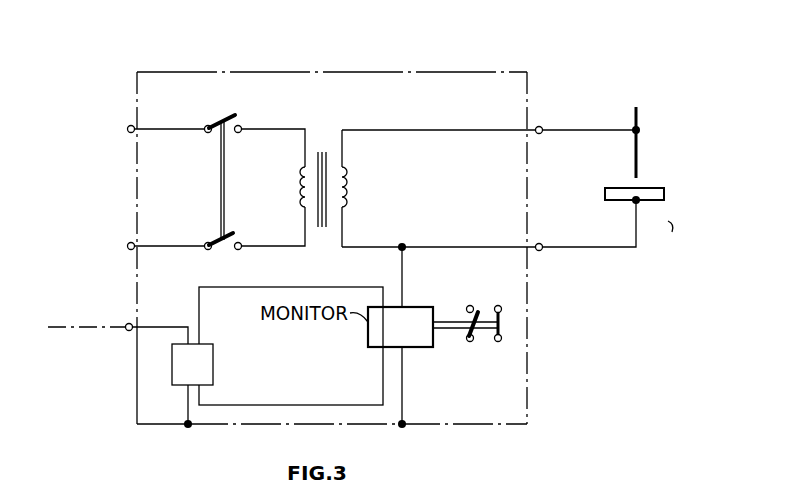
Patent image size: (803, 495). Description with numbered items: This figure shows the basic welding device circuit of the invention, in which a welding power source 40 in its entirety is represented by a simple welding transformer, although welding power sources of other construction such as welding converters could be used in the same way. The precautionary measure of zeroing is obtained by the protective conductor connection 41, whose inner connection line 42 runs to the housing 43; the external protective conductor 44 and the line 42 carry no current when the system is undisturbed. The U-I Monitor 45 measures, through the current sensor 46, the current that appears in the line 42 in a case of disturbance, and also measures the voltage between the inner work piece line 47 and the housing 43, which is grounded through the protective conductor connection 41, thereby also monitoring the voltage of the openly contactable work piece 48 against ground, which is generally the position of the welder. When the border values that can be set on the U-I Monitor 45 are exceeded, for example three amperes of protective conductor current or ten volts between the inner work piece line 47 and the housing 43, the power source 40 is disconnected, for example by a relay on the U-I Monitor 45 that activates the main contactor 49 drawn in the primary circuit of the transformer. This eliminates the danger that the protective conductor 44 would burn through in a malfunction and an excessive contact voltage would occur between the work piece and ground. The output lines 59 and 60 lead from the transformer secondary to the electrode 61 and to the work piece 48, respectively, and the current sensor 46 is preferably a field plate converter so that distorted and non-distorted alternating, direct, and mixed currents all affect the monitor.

The welding power source 40 is at (548, 412).
The protective conductor connection 41 is at (126, 324).
The inner connection line 42 is at (153, 329).
The housing 43 is at (137, 411).
The protective conductor 44 is at (92, 329).
The U-I Monitor 45 is at (410, 340).
The current sensor 46 is at (213, 363).
The inner work piece line 47 is at (497, 248).
The work piece 48 is at (652, 201).
The main contactor 49 is at (226, 191).
The output line 59 is at (569, 130).
The output line 60 is at (576, 248).
The electrode 61 is at (637, 148).